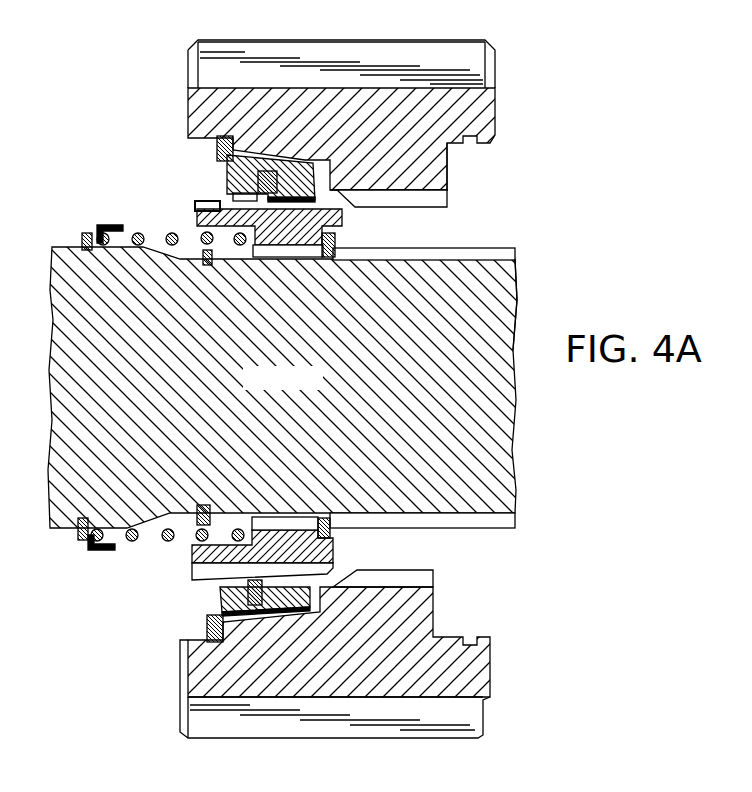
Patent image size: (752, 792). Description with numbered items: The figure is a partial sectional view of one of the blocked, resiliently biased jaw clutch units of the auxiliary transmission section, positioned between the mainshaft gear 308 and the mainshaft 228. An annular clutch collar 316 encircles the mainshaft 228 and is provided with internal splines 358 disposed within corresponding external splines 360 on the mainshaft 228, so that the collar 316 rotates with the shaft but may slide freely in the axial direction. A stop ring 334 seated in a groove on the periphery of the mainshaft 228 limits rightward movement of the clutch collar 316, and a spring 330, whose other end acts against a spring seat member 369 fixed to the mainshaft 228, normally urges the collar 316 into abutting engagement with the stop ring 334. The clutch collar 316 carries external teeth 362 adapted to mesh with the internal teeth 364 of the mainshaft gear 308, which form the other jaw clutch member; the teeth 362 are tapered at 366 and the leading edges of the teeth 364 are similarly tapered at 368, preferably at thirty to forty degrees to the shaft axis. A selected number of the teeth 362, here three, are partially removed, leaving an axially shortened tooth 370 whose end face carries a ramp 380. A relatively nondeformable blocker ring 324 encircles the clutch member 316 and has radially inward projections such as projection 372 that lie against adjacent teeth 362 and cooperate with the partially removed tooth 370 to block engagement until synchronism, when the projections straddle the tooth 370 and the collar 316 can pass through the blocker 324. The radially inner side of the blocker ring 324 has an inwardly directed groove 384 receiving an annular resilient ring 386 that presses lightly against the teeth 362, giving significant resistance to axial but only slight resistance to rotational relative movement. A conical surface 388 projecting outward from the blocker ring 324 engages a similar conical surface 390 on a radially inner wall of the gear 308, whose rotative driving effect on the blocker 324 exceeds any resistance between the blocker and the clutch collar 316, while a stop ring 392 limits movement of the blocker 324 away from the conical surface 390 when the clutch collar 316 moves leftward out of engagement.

The mainshaft gear 308 is at (422, 50).
The mainshaft 228 is at (282, 387).
The external splines 360 is at (470, 258).
The taper 366 is at (524, 224).
The internal teeth 364 is at (447, 190).
The taper 368 is at (355, 206).
The inwardly directed groove 384 is at (313, 150).
The annular resilient ring 386 is at (252, 158).
The radially inward projection 372 is at (212, 199).
The ramp 380 is at (199, 204).
The clutch collar 316 is at (342, 222).
The internal splines 358 is at (282, 250).
The stop ring 334 is at (333, 258).
The partially removed tooth 370 is at (176, 214).
The spring 330 is at (133, 540).
The spring seat member 369 is at (80, 546).
The external teeth 362 is at (307, 572).
The blocker ring 324 is at (218, 595).
The conical surface 388 is at (270, 622).
The conical surface 390 is at (213, 657).
The stop ring 392 is at (200, 660).